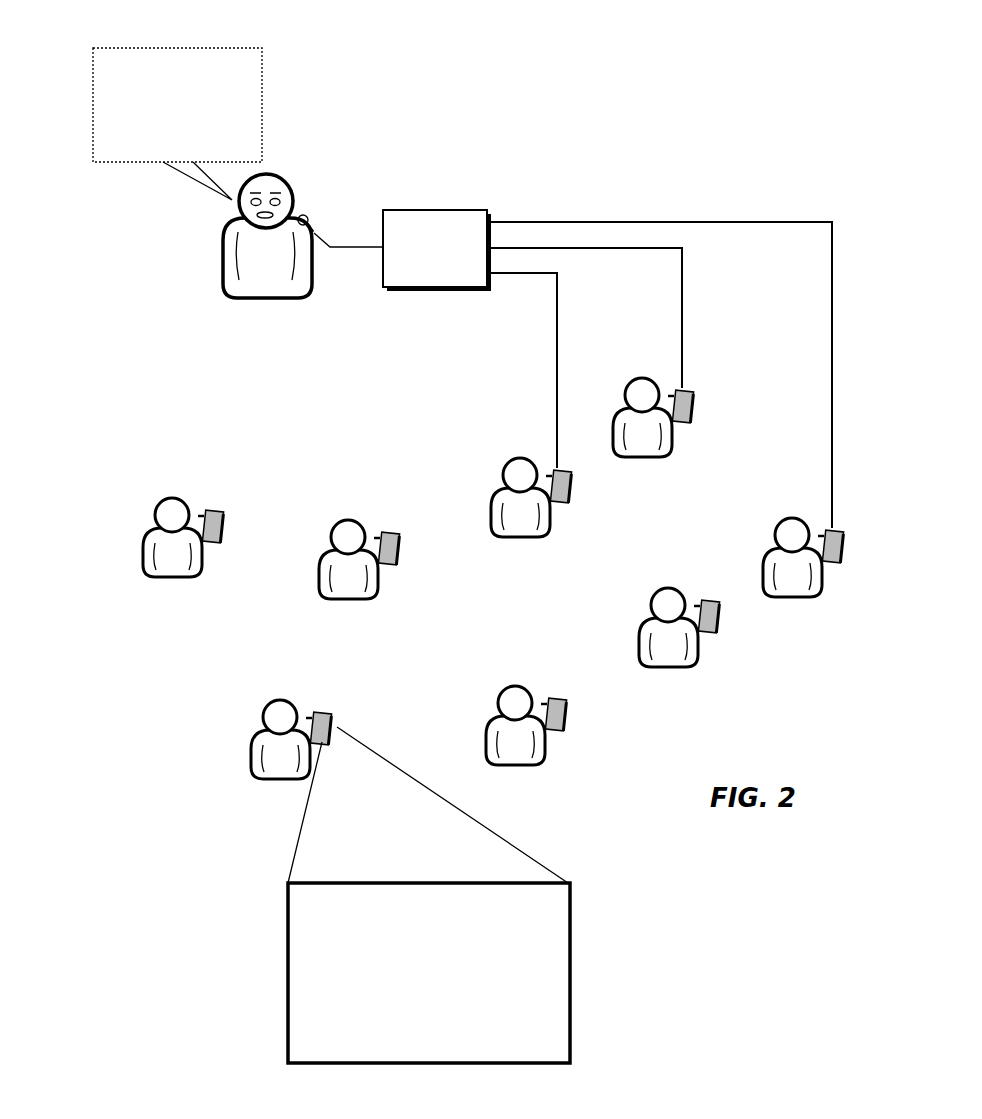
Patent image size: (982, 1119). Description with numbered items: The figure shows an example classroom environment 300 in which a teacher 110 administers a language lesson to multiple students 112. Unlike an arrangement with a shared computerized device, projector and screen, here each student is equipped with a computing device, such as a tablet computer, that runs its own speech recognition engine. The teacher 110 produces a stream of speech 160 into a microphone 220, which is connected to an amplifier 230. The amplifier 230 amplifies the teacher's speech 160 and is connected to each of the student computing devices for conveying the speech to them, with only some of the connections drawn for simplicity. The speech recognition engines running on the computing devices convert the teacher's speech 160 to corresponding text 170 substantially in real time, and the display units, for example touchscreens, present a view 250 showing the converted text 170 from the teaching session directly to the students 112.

The classroom system 300 is at (771, 71).
The students 112 is at (187, 646).
The teacher's speech 160 is at (115, 113).
The teacher 110 is at (223, 261).
The microphone 220 is at (314, 226).
The amplifier 230 is at (437, 250).
The view 250 is at (288, 926).
The text 170 is at (547, 964).